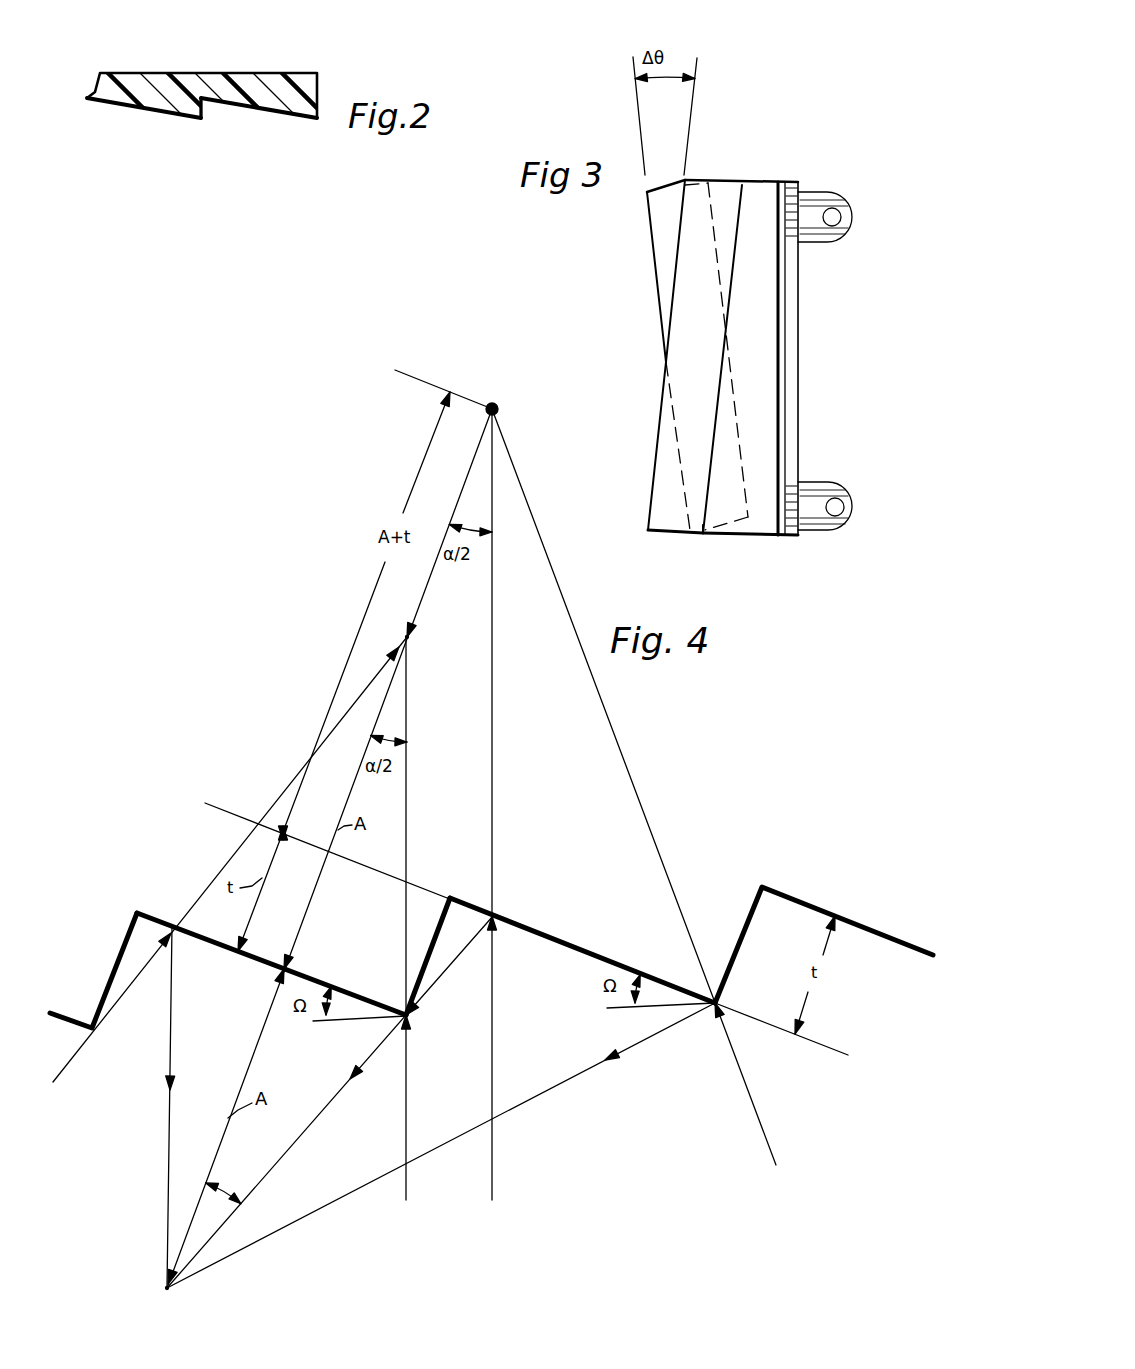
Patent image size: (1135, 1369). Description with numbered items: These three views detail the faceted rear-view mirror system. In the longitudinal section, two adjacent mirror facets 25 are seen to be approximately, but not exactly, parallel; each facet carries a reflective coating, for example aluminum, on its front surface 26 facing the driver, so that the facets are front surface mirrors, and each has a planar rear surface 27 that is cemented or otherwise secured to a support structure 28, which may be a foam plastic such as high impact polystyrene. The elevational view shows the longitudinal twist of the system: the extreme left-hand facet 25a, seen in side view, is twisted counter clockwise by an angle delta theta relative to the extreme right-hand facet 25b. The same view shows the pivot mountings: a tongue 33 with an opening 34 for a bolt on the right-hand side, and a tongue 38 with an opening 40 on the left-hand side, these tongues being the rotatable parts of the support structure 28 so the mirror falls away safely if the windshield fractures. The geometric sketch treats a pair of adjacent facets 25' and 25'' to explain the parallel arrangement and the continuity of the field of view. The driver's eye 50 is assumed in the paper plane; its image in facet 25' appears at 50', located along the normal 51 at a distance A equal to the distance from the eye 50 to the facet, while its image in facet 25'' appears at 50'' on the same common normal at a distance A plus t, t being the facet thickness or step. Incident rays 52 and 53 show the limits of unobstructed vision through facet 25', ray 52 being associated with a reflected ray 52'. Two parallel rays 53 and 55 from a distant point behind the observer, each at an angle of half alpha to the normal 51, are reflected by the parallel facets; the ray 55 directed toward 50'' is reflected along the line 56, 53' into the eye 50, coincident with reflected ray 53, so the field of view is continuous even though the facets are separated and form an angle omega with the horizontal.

In FIG. 2, the mirror facets 25 is at (202, 127).
In FIG. 2, the reflective surface 26 is at (293, 118).
In FIG. 2, the planar rear surface 27 is at (188, 73).
In FIG. 3, the planar rear surface 27 is at (723, 510).
In FIG. 3, the extreme left-hand mirror facet 25a is at (662, 308).
In FIG. 3, the extreme right-hand mirror facet 25b is at (653, 463).
In FIG. 3, the support structure 28 is at (755, 358).
In FIG. 3, the tongue 33 is at (813, 198).
In FIG. 3, the opening 34 is at (837, 218).
In FIG. 3, the tongue 38 is at (820, 490).
In FIG. 3, the opening 40 is at (838, 510).
In FIG. 4, the mirror facet 25' is at (271, 964).
In FIG. 4, the mirror facet 25'' is at (582, 950).
In FIG. 4, the driver's eye 50 is at (139, 1254).
In FIG. 4, the reflected eye image 50' is at (431, 645).
In FIG. 4, the eye image in second facet 50'' is at (518, 398).
In FIG. 4, the normal 51 is at (272, 997).
In FIG. 4, the incident ray 52 is at (230, 859).
In FIG. 4, the reflected ray 52' is at (152, 1107).
In FIG. 4, the reflected ray 53 is at (425, 918).
In FIG. 4, the ray line 53' is at (286, 1151).
In FIG. 4, the entering ray 55 is at (495, 1032).
In FIG. 4, the reflected ray 56 is at (447, 970).